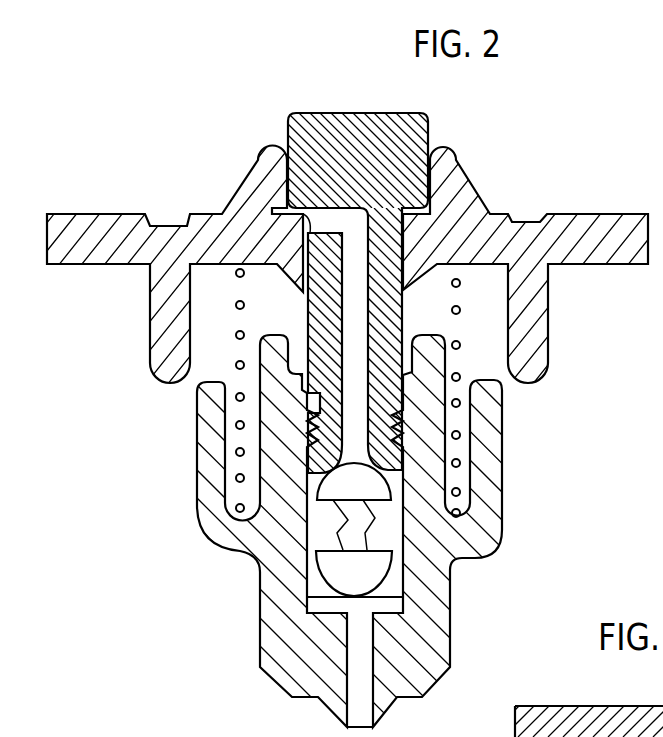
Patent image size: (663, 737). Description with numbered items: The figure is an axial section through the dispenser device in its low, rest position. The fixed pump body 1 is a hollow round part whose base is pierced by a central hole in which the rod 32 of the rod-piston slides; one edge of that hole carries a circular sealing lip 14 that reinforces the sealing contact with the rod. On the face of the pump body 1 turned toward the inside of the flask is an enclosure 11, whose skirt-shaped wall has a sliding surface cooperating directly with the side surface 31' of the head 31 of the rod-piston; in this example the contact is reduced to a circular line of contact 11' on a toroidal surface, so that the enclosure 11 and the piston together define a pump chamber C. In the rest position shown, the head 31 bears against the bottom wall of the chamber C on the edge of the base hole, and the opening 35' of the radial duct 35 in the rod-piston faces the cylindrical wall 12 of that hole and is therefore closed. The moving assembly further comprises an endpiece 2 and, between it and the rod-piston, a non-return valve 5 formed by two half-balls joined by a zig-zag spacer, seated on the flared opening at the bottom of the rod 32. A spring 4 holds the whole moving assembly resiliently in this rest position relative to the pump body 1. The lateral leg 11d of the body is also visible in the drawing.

The pump body 1 is at (611, 223).
The endpiece 2 is at (427, 637).
The spring 4 is at (465, 457).
The non-return valve 5 is at (383, 567).
The enclosure 11 is at (331, 251).
The circular line of contact 11' is at (470, 180).
The body leg 11d is at (535, 341).
The cylindrical wall of the hole 12 is at (408, 237).
The sealing lip 14 is at (303, 275).
The head of the rod-piston 31 is at (386, 292).
The side surface of the head 31' is at (264, 154).
The rod 32 is at (320, 308).
The radial duct 35 is at (353, 154).
The opening of the radial duct 35' is at (321, 154).
The pump chamber C is at (257, 197).